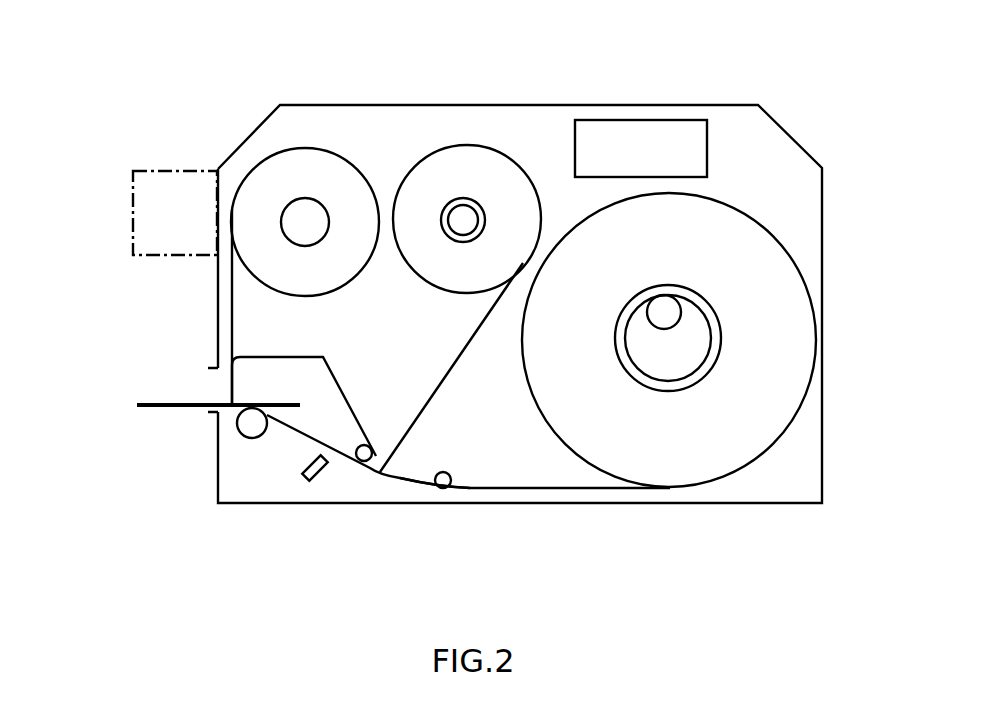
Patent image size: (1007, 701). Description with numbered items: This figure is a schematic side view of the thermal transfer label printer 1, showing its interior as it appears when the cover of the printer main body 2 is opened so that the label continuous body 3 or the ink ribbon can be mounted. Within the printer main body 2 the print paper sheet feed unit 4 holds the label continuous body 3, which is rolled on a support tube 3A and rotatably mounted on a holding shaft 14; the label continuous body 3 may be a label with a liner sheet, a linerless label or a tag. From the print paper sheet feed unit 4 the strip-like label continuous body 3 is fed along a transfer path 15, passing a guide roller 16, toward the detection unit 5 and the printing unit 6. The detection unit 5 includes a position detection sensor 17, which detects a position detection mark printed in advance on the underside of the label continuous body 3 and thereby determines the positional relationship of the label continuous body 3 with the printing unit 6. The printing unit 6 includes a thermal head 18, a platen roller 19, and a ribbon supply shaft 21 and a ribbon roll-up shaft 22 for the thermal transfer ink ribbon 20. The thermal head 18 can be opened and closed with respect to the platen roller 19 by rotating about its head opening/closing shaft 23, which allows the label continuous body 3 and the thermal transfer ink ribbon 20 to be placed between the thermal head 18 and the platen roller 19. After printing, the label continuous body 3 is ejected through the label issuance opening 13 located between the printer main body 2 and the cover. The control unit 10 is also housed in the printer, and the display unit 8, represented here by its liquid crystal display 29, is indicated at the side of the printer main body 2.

The thermal transfer label printer 1 is at (554, 255).
The printer main body 2 is at (824, 198).
The label continuous body 3 is at (155, 404).
The support tube 3A is at (722, 345).
The print paper sheet feed unit 4 is at (691, 332).
The detection unit 5 is at (321, 511).
The printing unit 6 is at (243, 446).
The display unit 8 is at (133, 181).
The control unit 10 is at (645, 122).
The label issuance opening 13 is at (205, 392).
The holding shaft 14 is at (665, 322).
The transfer path 15 is at (470, 480).
The guide roller 16 is at (443, 490).
The position detection sensor 17 is at (310, 482).
The thermal head 18 is at (270, 357).
The platen roller 19 is at (237, 423).
The thermal transfer ink ribbon 20 is at (232, 292).
The ribbon supply shaft 21 is at (462, 205).
The ribbon roll-up shaft 22 is at (305, 198).
The head opening/closing shaft 23 is at (381, 474).
The liquid crystal display 29 is at (121, 213).